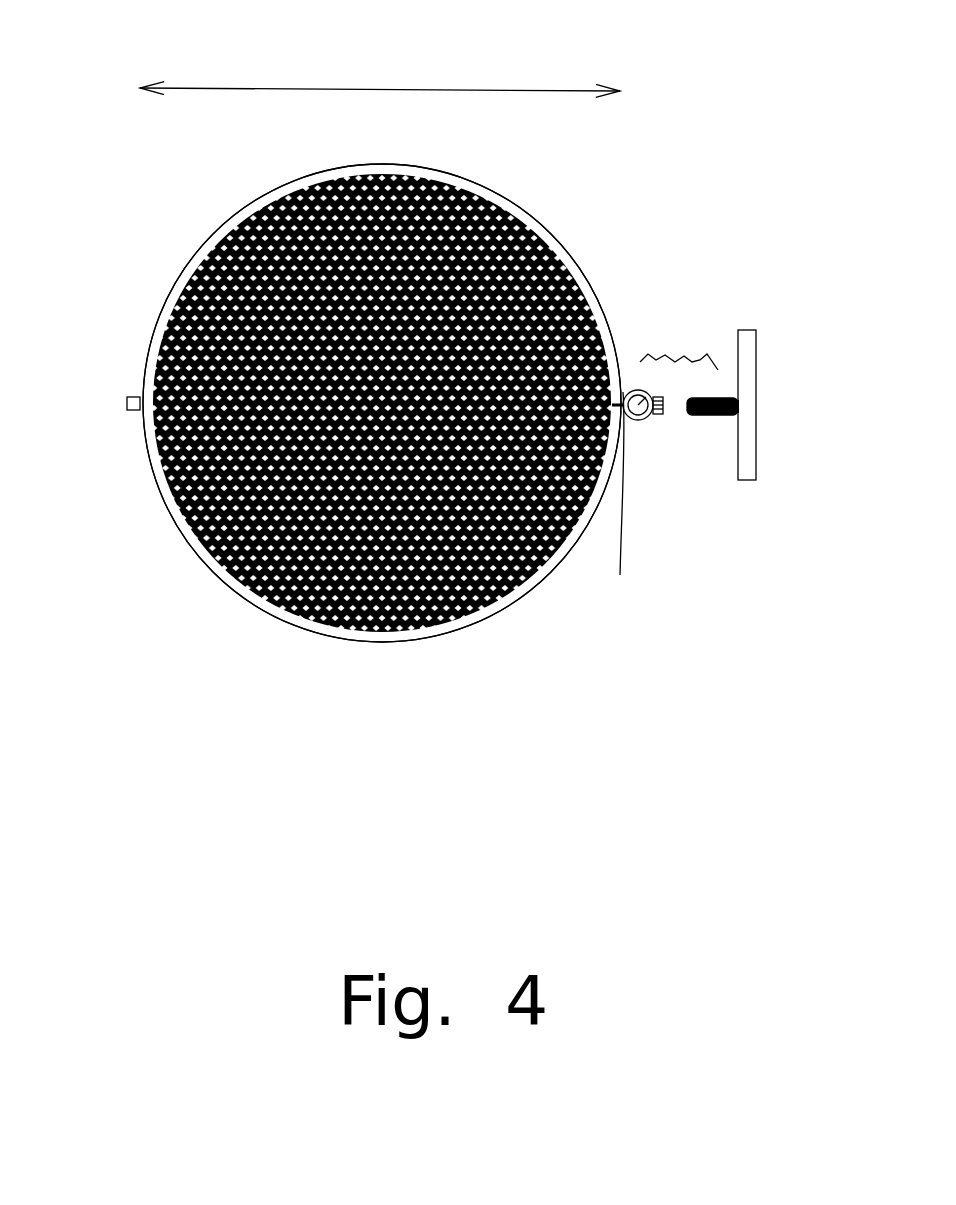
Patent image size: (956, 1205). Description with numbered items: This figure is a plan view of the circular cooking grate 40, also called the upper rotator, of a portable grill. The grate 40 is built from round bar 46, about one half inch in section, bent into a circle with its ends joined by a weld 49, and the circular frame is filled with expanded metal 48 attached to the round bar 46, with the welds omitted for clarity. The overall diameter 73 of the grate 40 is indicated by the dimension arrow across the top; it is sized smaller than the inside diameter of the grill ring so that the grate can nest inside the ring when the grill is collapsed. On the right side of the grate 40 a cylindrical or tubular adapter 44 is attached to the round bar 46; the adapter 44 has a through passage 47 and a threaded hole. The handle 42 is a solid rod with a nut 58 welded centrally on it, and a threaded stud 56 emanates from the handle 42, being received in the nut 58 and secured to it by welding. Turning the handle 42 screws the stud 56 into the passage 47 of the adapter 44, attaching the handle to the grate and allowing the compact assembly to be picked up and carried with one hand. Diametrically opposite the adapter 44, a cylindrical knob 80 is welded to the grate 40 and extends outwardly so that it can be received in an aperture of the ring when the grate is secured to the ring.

The cooking grate 40 is at (560, 217).
The handle 42 is at (748, 357).
The adapter 44 is at (642, 422).
The round bar 46 is at (488, 615).
The through passage 47 is at (623, 392).
The expanded metal 48 is at (400, 630).
The weld 49 is at (631, 508).
The threaded stud 56 is at (698, 415).
The nut 58 is at (738, 407).
The diameter 73 is at (247, 88).
The knob 80 is at (138, 400).